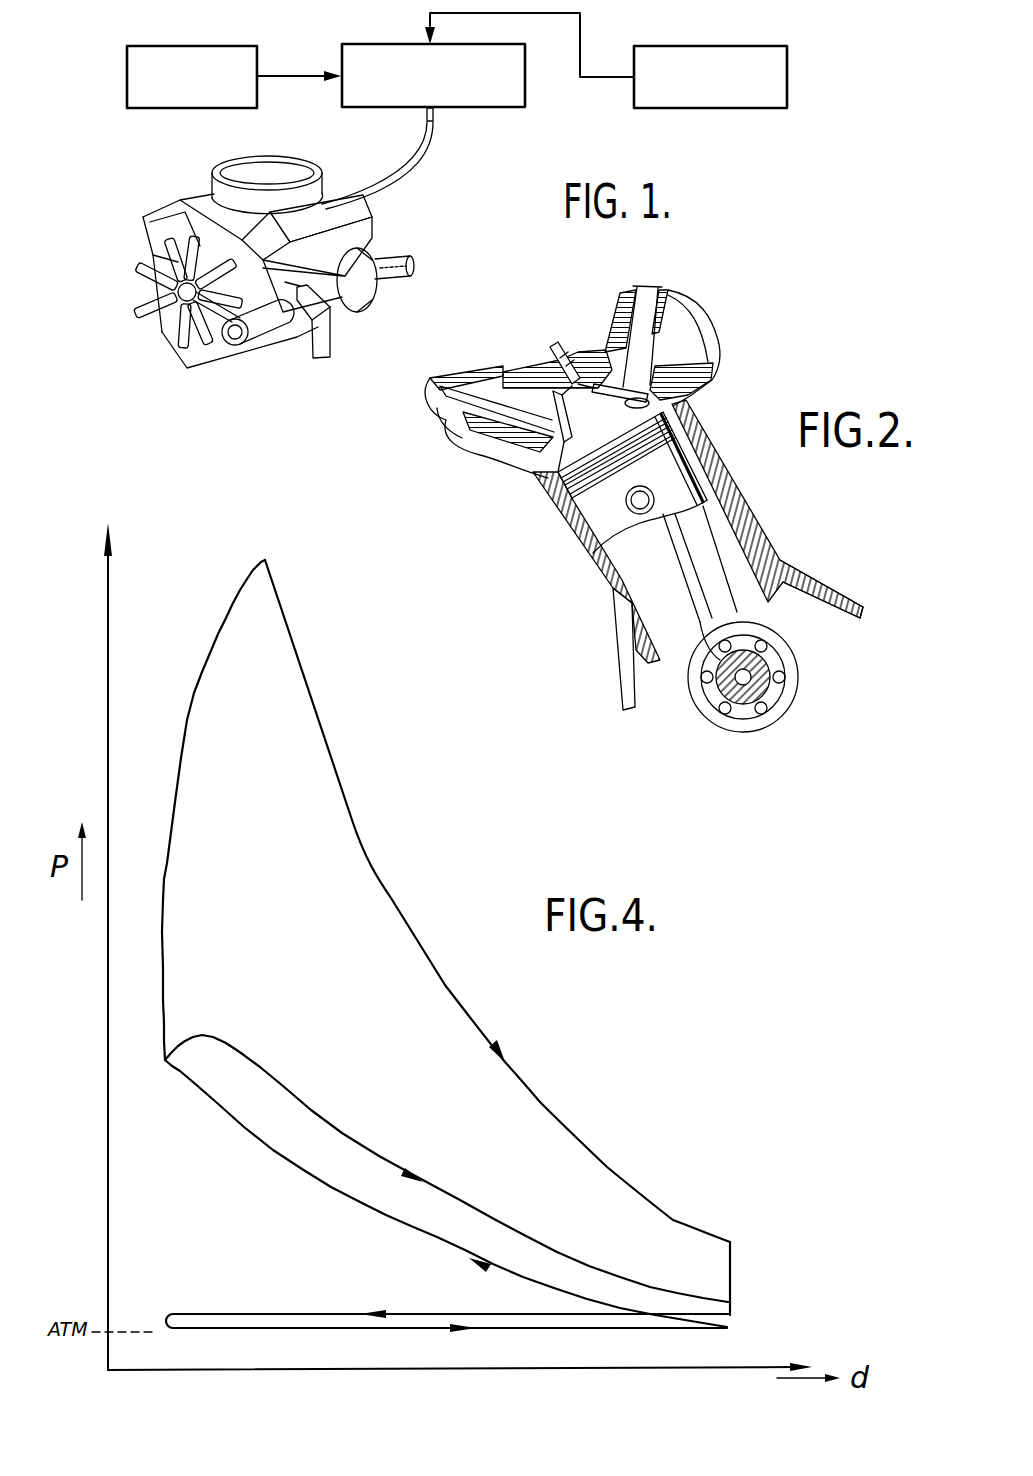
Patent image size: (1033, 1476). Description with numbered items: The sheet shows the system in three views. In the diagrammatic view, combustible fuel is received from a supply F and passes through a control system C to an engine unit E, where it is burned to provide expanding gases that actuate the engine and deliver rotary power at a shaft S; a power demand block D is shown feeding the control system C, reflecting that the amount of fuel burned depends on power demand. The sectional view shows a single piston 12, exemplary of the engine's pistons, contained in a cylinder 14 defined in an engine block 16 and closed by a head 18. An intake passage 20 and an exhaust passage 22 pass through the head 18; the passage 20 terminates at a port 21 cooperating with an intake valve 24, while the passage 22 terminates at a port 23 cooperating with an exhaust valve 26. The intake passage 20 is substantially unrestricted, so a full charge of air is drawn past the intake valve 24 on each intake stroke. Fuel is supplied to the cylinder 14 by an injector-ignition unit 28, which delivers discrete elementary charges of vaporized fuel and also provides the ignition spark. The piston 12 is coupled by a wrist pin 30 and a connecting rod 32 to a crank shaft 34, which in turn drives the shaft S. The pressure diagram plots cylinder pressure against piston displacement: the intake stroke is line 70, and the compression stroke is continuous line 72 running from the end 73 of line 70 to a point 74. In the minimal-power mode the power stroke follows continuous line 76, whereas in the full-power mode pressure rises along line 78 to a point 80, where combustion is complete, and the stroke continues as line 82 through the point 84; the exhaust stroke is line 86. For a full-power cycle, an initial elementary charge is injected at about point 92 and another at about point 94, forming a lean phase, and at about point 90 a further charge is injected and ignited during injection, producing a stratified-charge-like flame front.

In FIG. 1, the fuel supply F is at (127, 100).
In FIG. 1, the control system C is at (480, 108).
In FIG. 1, the power demand D is at (788, 101).
In FIG. 1, the engine unit E is at (150, 364).
In FIG. 1, the shaft S is at (385, 262).
In FIG. 2, the piston 12 is at (674, 470).
In FIG. 2, the cylinder 14 is at (722, 522).
In FIG. 2, the engine block 16 is at (783, 560).
In FIG. 2, the head 18 is at (593, 352).
In FIG. 2, the intake passage 20 is at (478, 466).
In FIG. 2, the port 21 is at (550, 470).
In FIG. 2, the exhaust passage 22 is at (700, 362).
In FIG. 2, the port 23 is at (650, 403).
In FIG. 2, the intake valve 24 is at (507, 362).
In FIG. 2, the exhaust valve 26 is at (652, 322).
In FIG. 2, the injector-ignition unit 28 is at (558, 345).
In FIG. 2, the wrist pin 30 is at (628, 509).
In FIG. 2, the connecting rod 32 is at (675, 575).
In FIG. 2, the crank shaft 34 is at (772, 663).
In FIG. 4, the line 70 is at (498, 1330).
In FIG. 4, the continuous line 72 is at (388, 1200).
In FIG. 4, the end 73 is at (727, 1328).
In FIG. 4, the point 74 is at (165, 1062).
In FIG. 4, the continuous line 76 is at (302, 1100).
In FIG. 4, the line 78 is at (170, 848).
In FIG. 4, the point 80 is at (268, 564).
In FIG. 4, the line 82 is at (395, 895).
In FIG. 4, the point 84 is at (732, 1243).
In FIG. 4, the line 86 is at (243, 1317).
In FIG. 4, the point 90 is at (200, 1070).
In FIG. 4, the point 92 is at (432, 1338).
In FIG. 4, the point 94 is at (442, 1228).